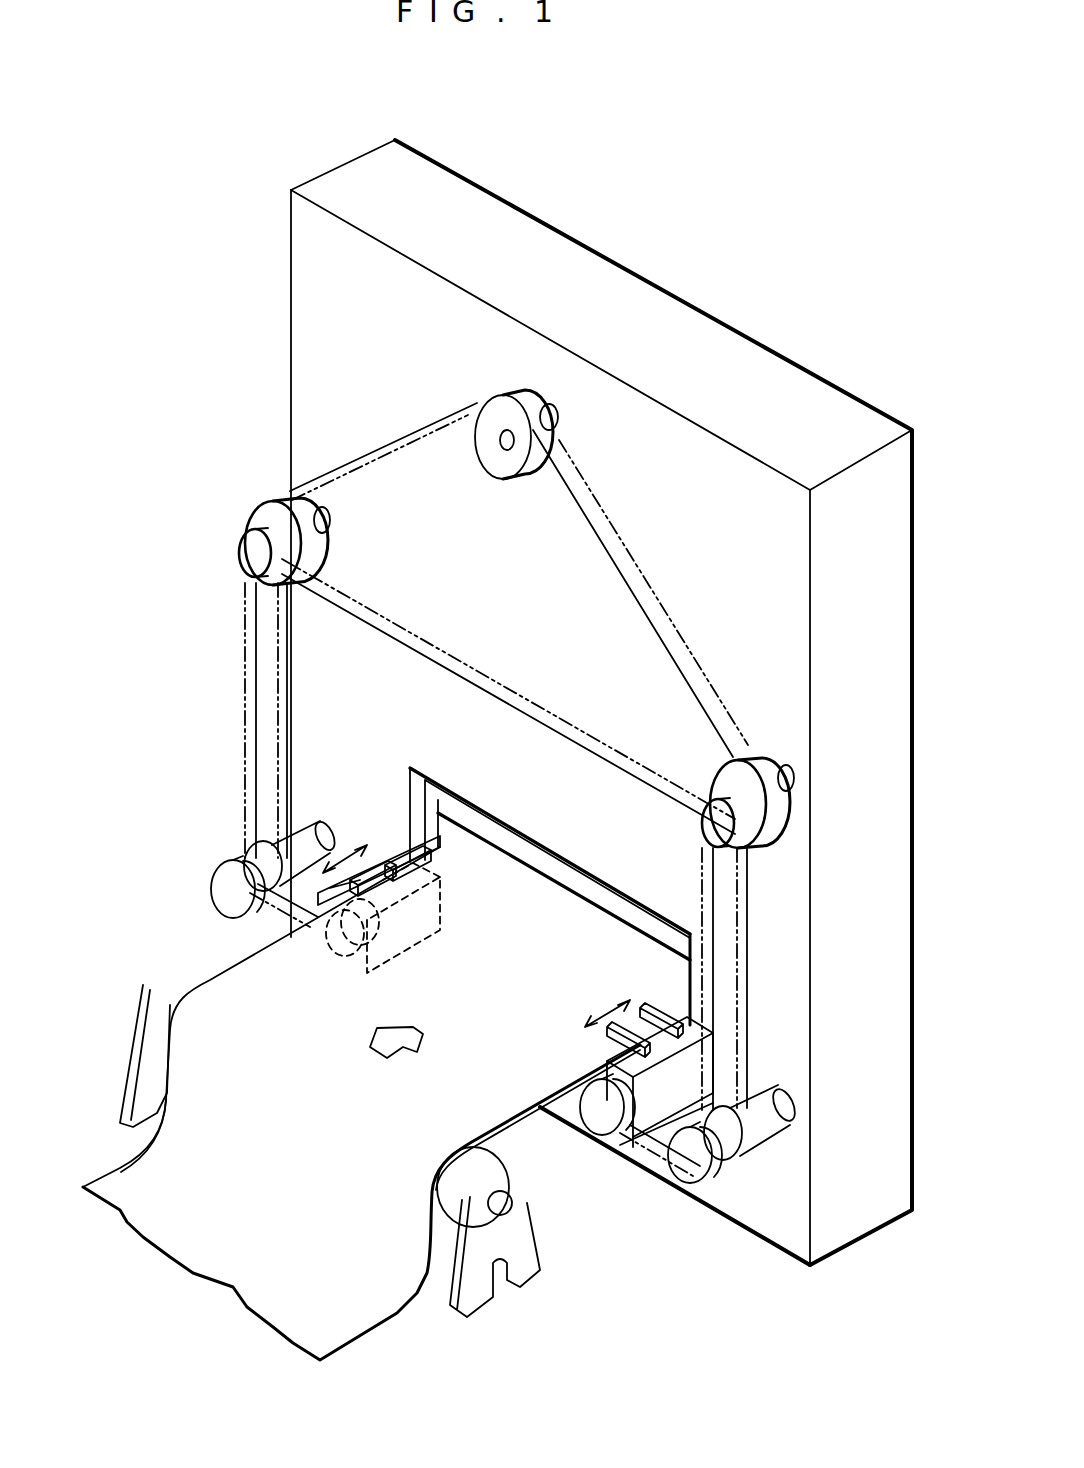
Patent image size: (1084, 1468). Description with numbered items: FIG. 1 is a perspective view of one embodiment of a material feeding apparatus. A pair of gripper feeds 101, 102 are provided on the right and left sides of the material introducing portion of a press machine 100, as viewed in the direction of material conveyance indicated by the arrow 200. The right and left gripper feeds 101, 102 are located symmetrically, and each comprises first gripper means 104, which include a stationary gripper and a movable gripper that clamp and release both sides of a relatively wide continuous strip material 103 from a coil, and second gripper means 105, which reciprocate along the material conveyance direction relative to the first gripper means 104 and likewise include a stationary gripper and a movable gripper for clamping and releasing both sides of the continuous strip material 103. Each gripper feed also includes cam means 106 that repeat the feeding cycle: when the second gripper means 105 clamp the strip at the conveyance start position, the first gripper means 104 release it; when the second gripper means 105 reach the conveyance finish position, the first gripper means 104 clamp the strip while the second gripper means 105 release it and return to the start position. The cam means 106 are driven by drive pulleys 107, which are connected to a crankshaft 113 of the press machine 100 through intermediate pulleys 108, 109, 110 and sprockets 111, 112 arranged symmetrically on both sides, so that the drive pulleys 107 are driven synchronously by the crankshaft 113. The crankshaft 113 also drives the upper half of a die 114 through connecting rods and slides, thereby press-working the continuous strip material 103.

The press machine 100 is at (555, 240).
The gripper feed 101 is at (633, 1184).
The gripper feed 102 is at (240, 938).
The continuous strip material 103 is at (207, 1252).
The first gripper means 104 is at (395, 852).
The second gripper means 105 is at (378, 862).
The cam means 106 is at (427, 933).
The drive pulley 107 is at (340, 970).
The intermediate pulley 108 is at (225, 893).
The intermediate pulley 109 is at (258, 853).
The intermediate pulley 110 is at (240, 553).
The sprocket 111 is at (325, 548).
The sprocket 112 is at (512, 478).
The crankshaft 113 is at (560, 400).
The die 114 is at (540, 858).
The arrow 200 is at (381, 1060).